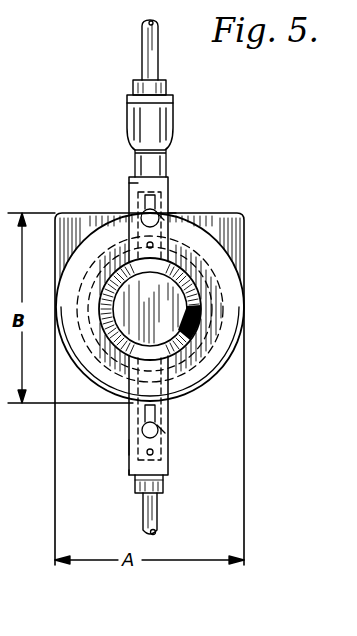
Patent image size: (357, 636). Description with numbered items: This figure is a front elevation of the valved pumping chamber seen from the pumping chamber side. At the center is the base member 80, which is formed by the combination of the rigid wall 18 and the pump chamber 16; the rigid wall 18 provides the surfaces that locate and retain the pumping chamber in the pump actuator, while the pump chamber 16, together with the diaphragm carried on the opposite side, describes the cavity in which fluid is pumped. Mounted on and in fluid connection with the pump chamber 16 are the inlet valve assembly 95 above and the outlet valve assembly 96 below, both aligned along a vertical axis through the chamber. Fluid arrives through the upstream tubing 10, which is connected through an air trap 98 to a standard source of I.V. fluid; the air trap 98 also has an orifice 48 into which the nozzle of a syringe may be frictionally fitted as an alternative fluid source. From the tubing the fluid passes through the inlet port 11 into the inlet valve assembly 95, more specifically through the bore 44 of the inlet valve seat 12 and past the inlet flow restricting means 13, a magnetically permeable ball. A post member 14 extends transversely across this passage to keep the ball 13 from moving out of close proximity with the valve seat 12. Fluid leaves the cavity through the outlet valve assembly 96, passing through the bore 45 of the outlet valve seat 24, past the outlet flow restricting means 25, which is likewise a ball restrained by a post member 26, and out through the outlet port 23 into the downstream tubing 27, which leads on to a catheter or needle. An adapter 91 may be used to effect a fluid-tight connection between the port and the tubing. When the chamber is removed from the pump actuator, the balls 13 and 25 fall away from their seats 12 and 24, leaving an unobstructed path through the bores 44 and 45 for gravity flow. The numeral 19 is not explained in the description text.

The upstream tubing 10 is at (143, 37).
The orifice 48 is at (140, 80).
The air trap 98 is at (172, 113).
The inlet valve assembly 95 is at (129, 183).
The inlet bore 44 is at (135, 200).
The inlet port 11 is at (169, 178).
The inlet valve seat 12 is at (162, 205).
The inlet flow restricting means 13 is at (164, 216).
The rigid wall 18 is at (168, 214).
The post member 14 is at (153, 245).
The internal chamber 19 is at (222, 300).
The base member 80 is at (244, 318).
The pump chamber 16 is at (192, 340).
The outlet bore 45 is at (176, 405).
The outlet valve seat 24 is at (168, 418).
The outlet flow restricting means 25 is at (167, 440).
The post member 26 is at (153, 453).
The outlet valve assembly 96 is at (129, 446).
The outlet port 23 is at (131, 478).
The adapter 91 is at (165, 490).
The downstream tubing 27 is at (144, 525).